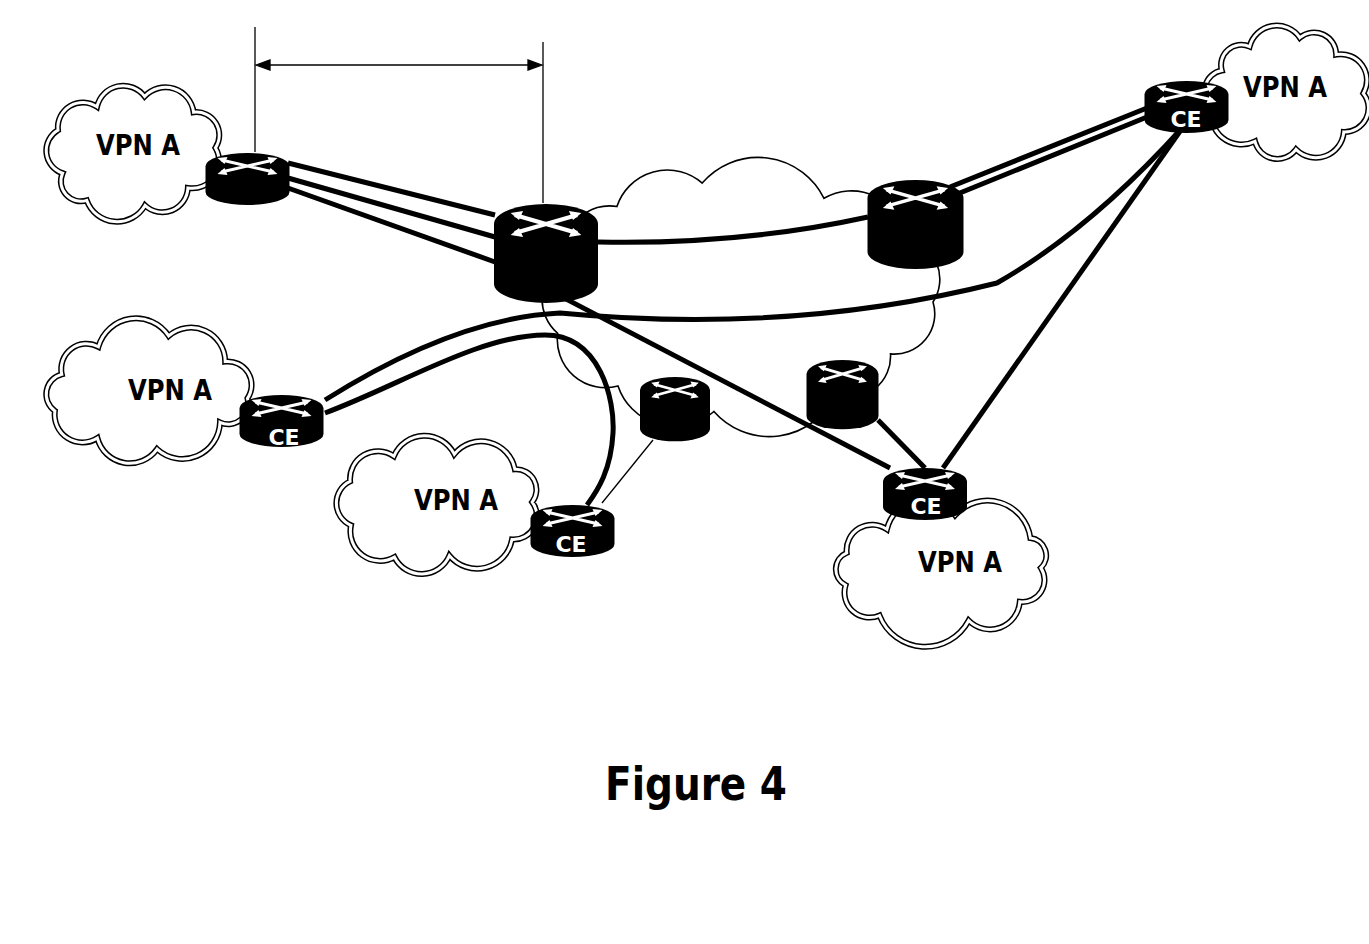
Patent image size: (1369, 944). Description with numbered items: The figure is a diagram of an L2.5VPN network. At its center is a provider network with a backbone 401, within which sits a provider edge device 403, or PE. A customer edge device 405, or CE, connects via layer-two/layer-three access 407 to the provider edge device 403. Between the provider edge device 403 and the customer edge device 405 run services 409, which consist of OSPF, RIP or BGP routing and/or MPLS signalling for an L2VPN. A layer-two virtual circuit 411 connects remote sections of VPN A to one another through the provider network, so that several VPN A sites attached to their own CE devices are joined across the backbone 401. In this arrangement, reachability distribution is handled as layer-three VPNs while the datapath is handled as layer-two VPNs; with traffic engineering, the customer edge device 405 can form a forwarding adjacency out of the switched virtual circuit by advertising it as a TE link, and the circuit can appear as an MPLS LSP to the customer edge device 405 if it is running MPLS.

The provider network backbone 401 is at (760, 359).
The provider edge device 403 is at (565, 202).
The customer edge device 405 is at (255, 205).
The Layer-2/Layer-3 access 407 is at (442, 195).
The services 409 is at (415, 65).
The Layer-2 virtual circuit 411 is at (732, 230).